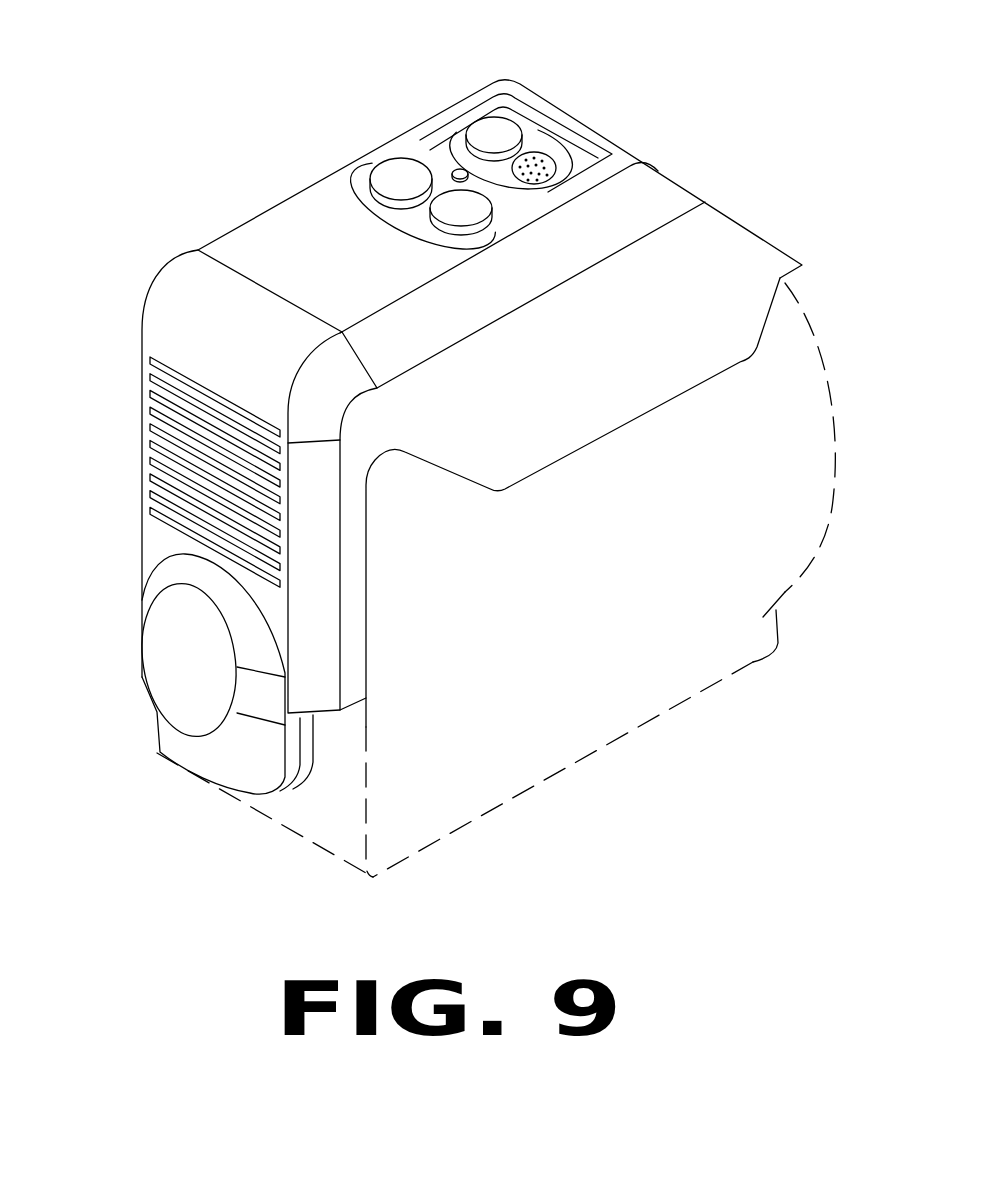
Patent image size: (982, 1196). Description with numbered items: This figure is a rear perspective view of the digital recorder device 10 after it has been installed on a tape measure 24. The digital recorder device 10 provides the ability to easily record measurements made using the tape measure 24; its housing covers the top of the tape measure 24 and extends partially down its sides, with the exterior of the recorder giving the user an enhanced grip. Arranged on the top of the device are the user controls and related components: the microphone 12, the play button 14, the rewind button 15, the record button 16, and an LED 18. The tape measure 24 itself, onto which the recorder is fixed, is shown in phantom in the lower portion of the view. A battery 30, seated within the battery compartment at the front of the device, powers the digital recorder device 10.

The digital recorder device 10 is at (182, 280).
The microphone 12 is at (492, 130).
The play button 14 is at (387, 168).
The rewind button 15 is at (443, 197).
The record button 16 is at (548, 153).
The LED 18 is at (457, 166).
The tape measure 24 is at (520, 748).
The battery 30 is at (188, 653).